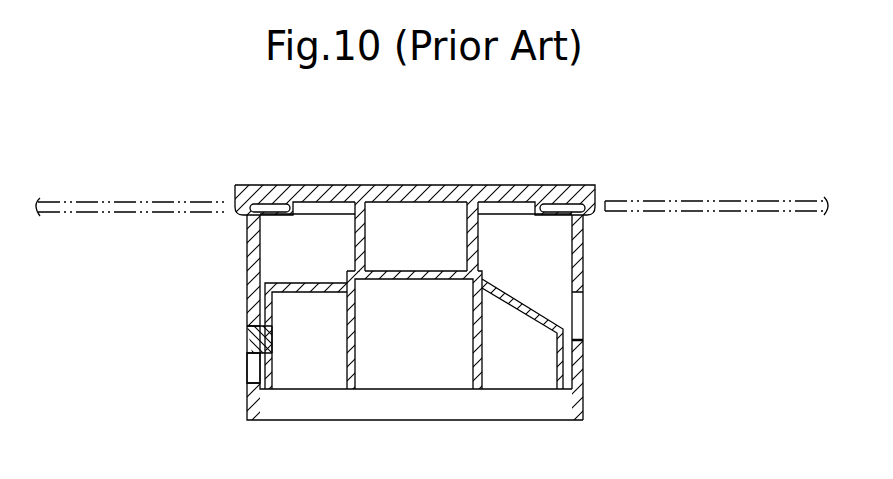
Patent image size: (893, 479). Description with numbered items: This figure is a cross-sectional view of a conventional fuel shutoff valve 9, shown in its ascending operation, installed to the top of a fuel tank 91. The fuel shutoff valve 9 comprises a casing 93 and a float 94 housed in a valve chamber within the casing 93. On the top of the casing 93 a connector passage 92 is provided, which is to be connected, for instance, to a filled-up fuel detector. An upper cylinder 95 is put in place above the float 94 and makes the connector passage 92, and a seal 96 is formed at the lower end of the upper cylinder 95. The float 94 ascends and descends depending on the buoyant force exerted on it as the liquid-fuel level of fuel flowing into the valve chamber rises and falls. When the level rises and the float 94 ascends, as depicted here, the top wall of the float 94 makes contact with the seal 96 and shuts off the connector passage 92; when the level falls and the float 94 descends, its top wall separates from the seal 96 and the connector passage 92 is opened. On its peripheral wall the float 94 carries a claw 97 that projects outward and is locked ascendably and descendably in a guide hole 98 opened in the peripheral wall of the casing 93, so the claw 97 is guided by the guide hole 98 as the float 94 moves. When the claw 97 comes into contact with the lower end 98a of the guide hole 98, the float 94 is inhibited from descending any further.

The fuel shutoff valve 9 is at (227, 184).
The fuel tank 91 is at (655, 200).
The connector passage 92 is at (387, 220).
The casing 93 is at (583, 388).
The float 94 is at (530, 308).
The upper cylinder 95 is at (477, 250).
The seal 96 is at (353, 262).
The claw 97 is at (247, 353).
The guide hole 98 is at (247, 335).
The lower end of the guide hole 98a is at (250, 373).